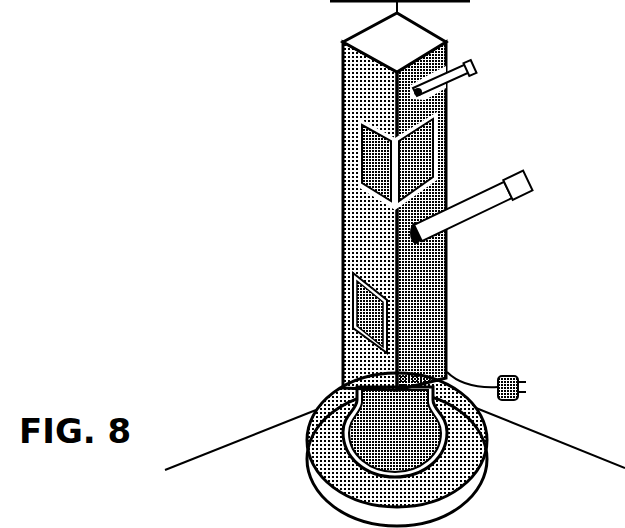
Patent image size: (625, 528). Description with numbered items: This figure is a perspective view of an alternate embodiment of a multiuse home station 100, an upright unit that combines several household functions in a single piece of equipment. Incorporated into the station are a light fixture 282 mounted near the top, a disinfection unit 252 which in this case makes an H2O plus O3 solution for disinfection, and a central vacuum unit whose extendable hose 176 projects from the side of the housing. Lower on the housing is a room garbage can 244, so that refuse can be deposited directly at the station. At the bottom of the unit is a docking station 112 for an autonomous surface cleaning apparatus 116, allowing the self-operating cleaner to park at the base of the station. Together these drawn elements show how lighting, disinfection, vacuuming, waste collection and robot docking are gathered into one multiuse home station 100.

The multiuse home station 100 is at (250, 56).
The docking station 112 is at (357, 370).
The autonomous surface cleaning apparatus 116 is at (338, 502).
The disinfection unit 252 is at (350, 128).
The room garbage can 244 is at (348, 300).
The light fixture 282 is at (472, 80).
The extendable hose 176 is at (477, 222).